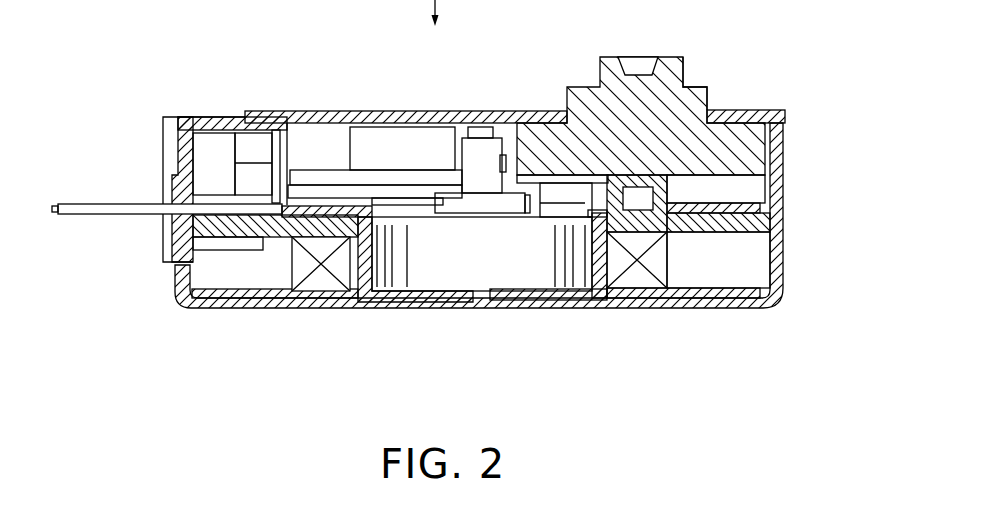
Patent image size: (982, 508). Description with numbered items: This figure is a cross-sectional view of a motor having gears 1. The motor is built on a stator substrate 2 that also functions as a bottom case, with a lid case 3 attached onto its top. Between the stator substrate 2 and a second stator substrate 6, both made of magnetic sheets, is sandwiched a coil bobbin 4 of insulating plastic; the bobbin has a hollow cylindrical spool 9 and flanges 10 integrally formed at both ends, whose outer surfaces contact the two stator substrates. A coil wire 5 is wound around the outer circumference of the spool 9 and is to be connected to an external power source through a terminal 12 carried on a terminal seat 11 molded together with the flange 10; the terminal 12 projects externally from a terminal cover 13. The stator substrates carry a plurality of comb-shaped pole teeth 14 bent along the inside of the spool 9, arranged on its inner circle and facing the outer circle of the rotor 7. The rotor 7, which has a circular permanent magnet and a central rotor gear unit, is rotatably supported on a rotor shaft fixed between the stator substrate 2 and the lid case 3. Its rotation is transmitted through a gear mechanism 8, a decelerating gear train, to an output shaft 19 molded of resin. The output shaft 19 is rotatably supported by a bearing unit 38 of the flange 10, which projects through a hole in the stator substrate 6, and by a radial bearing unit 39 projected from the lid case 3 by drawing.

The motor having gears 1 is at (516, 97).
The stator substrate 2 is at (780, 297).
The lid case 3 is at (737, 115).
The coil bobbin 4 is at (763, 220).
The coil wire 5 is at (658, 268).
The stator substrate 6 is at (745, 203).
The rotor 7 is at (520, 277).
The gear mechanism 8 is at (320, 160).
The spool 9 is at (604, 270).
The flange 10 is at (325, 227).
The terminal seat 11 is at (228, 225).
The terminal 12 is at (107, 208).
The terminal cover 13 is at (168, 162).
The pole teeth 14 is at (368, 255).
The output shaft 19 is at (675, 49).
The bearing unit 38 is at (668, 200).
The radial bearing unit 39 is at (707, 93).